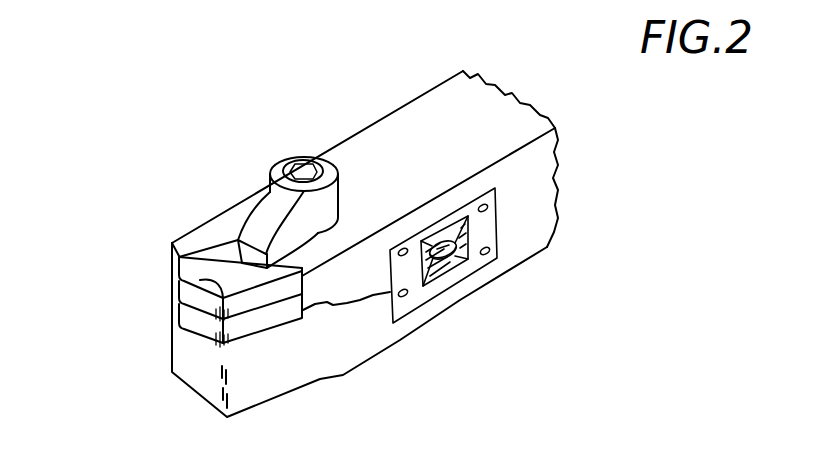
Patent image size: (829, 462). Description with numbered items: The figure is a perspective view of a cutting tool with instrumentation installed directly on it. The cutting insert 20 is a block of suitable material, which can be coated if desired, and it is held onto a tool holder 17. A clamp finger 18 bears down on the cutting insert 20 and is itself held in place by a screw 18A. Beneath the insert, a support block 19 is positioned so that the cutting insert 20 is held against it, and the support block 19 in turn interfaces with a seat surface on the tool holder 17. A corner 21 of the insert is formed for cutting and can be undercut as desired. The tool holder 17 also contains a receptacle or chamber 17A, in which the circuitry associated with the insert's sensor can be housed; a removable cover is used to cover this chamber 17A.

The tool holder 17 is at (473, 109).
The receptacle or chamber 17A is at (453, 259).
The clamp finger 18 is at (252, 212).
The screw 18A is at (303, 164).
The support block 19 is at (267, 325).
The cutting insert 20 is at (207, 256).
The corner 21 is at (201, 281).